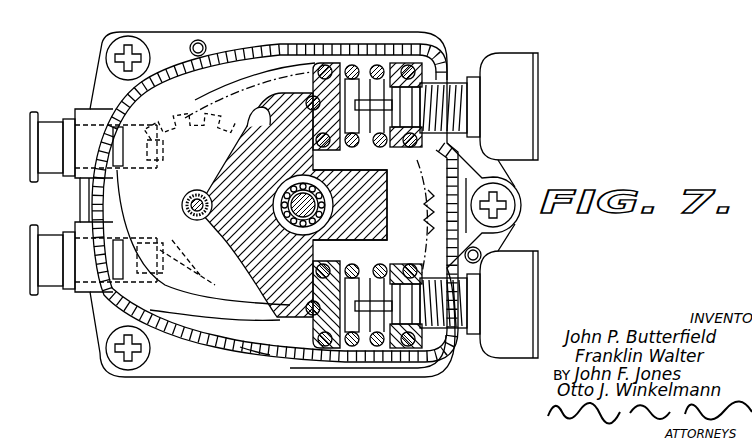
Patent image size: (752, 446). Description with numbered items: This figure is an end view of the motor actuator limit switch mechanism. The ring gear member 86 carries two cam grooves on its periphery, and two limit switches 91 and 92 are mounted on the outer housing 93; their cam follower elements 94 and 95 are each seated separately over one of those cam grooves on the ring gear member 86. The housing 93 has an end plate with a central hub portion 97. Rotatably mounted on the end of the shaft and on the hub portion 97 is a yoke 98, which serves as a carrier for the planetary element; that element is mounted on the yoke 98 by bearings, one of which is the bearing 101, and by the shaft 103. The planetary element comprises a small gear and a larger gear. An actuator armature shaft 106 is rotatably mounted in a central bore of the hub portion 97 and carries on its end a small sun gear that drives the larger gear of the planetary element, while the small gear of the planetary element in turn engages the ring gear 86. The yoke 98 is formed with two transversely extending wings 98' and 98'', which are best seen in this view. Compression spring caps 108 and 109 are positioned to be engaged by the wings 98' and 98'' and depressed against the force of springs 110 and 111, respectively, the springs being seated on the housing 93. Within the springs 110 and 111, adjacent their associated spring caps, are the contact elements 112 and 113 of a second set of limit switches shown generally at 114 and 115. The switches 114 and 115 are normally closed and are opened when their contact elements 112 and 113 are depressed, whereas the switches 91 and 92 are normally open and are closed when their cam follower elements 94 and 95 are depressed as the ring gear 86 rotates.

The ring gear member 86 is at (282, 28).
The limit switch 91 is at (128, 130).
The limit switch 92 is at (112, 297).
The outer housing 93 is at (222, 50).
The cam follower element 94 is at (174, 113).
The cam follower element 95 is at (183, 288).
The hub portion 97 is at (380, 180).
The yoke 98 is at (291, 205).
The wing 98' is at (231, 360).
The wing 98'' is at (233, 128).
The bearing 101 is at (186, 210).
The shaft 103 is at (183, 204).
The actuator armature shaft 106 is at (333, 207).
The compression spring cap 108 is at (348, 346).
The compression spring cap 109 is at (333, 83).
The spring 110 is at (393, 327).
The spring 111 is at (387, 73).
The contact element 112 is at (377, 323).
The contact element 113 is at (357, 142).
The limit switch 114 is at (520, 283).
The limit switch 115 is at (513, 117).